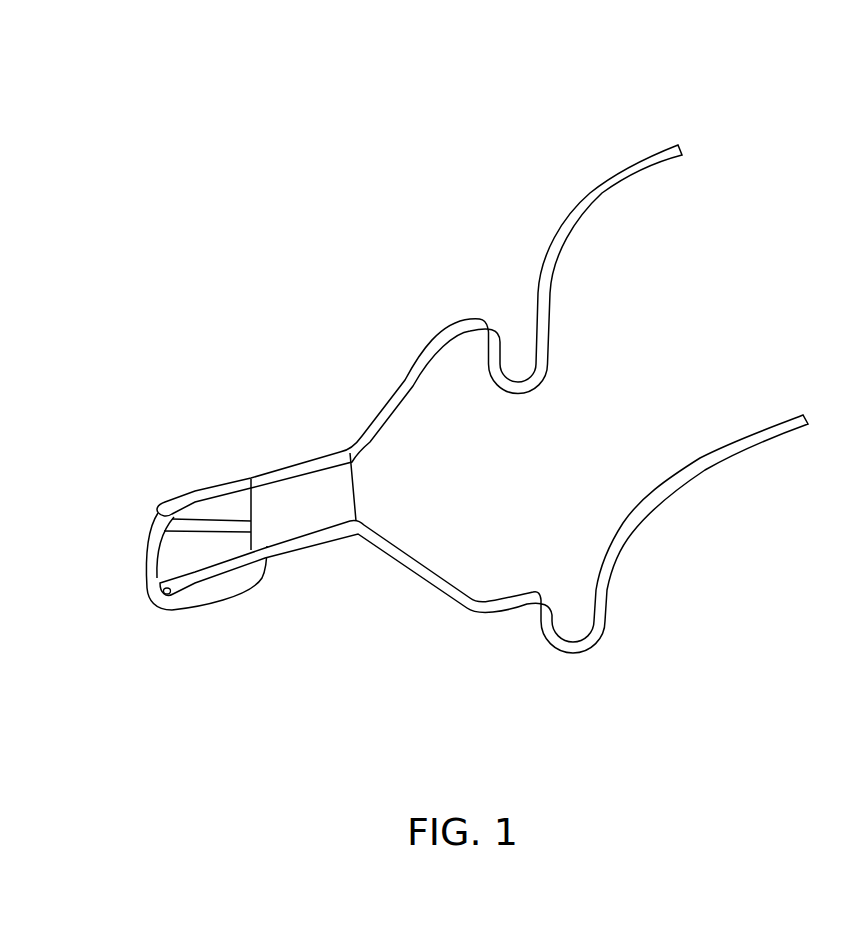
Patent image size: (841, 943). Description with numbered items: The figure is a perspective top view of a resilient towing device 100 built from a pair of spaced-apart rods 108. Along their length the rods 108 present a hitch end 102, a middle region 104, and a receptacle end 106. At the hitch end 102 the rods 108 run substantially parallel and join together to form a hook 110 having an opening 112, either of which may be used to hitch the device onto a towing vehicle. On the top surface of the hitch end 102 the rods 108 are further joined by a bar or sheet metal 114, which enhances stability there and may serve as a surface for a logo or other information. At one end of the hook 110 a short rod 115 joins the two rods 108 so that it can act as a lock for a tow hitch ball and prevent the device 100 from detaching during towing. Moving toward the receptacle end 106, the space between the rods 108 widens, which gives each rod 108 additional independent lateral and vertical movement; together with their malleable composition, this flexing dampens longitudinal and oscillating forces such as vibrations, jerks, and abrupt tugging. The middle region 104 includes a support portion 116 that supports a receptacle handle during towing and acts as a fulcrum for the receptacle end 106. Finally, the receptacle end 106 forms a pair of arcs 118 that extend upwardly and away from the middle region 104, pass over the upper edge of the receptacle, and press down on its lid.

The resilient towing device 100 is at (262, 80).
The hitch end 102 is at (173, 465).
The middle region 104 is at (457, 278).
The receptacle end 106 is at (603, 135).
The pair of rods 108 is at (398, 390).
The hook 110 is at (179, 614).
The opening 112 is at (226, 589).
The sheet metal 114 is at (300, 492).
The rod 115 is at (148, 557).
The support portion 116 is at (523, 392).
The pair of arcs 118 is at (660, 157).